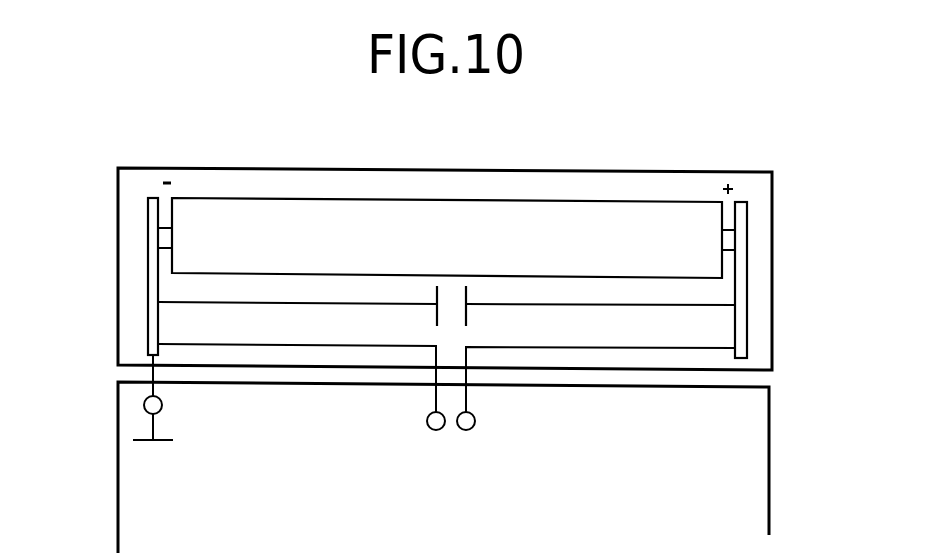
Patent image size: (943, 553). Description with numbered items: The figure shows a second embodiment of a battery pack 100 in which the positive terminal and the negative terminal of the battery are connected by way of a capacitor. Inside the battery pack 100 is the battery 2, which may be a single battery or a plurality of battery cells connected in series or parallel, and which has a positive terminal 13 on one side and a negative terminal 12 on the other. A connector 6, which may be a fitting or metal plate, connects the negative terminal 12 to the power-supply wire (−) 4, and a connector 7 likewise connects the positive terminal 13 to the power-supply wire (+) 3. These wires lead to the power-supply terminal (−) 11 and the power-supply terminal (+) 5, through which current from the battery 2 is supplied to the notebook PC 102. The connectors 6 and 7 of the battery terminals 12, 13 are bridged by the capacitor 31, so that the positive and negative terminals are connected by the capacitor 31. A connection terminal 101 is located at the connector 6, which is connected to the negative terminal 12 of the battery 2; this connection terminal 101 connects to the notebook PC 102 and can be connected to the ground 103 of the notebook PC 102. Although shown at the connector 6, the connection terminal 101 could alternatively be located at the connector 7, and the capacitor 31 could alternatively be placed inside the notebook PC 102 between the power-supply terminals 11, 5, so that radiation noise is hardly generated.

The battery pack 100 is at (698, 172).
The battery 2 is at (650, 200).
The connector 6 is at (153, 288).
The connector 7 is at (740, 292).
The negative terminal 12 is at (160, 242).
The positive terminal 13 is at (730, 238).
The capacitor 31 is at (448, 300).
The power-supply wire (−) 4 is at (325, 347).
The power-supply wire (+) 3 is at (595, 350).
The power-supply terminal (−) 11 is at (436, 430).
The power-supply terminal (+) 5 is at (466, 430).
The connection terminal 101 is at (143, 408).
The ground 103 is at (162, 443).
The notebook PC 102 is at (772, 448).